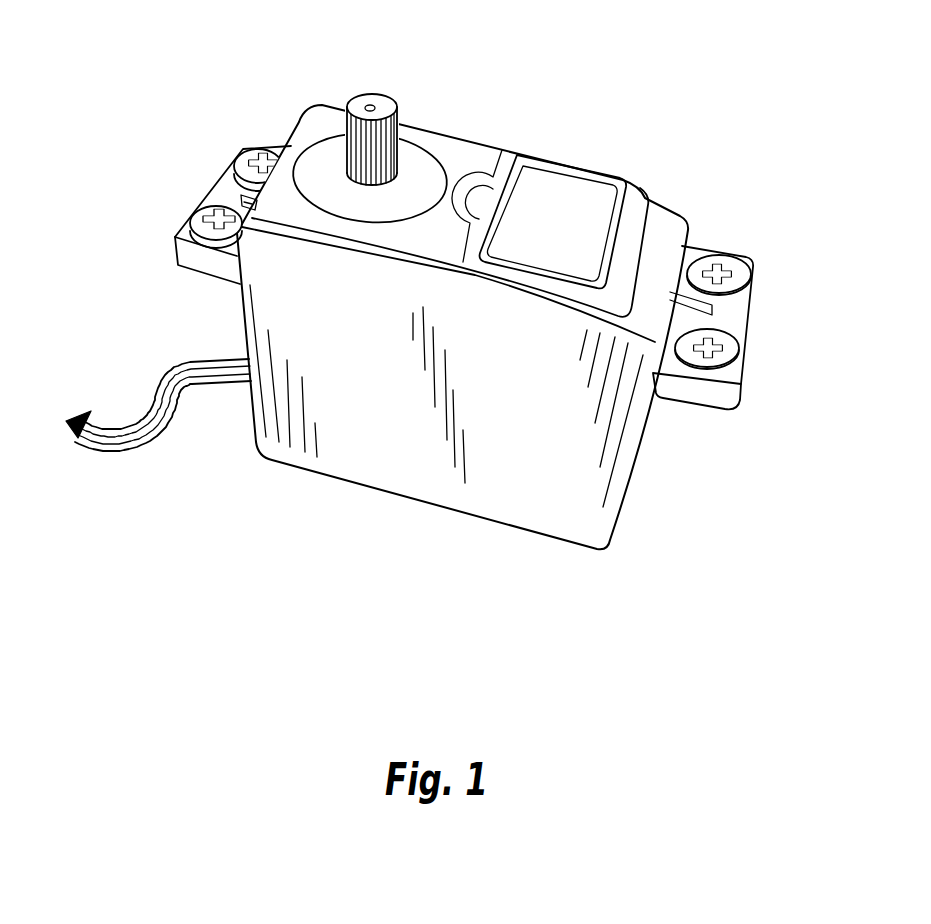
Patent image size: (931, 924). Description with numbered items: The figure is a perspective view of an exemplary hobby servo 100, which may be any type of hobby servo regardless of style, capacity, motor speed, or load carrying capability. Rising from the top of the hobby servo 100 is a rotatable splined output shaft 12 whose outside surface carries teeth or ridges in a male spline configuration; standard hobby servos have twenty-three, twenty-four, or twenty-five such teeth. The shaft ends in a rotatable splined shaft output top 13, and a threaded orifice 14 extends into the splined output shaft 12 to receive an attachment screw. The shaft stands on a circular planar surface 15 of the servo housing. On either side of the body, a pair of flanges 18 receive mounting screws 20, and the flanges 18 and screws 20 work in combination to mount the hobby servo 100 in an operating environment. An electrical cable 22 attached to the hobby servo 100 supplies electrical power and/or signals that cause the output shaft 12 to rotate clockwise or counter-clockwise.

The hobby servo 100 is at (337, 578).
The splined output shaft 12 is at (399, 126).
The splined shaft output top 13 is at (379, 101).
The threaded orifice 14 is at (358, 100).
The circular planar surface 15 is at (421, 176).
The flanges 18 is at (208, 263).
The mounting screws 20 is at (192, 215).
The electrical cable 22 is at (143, 445).